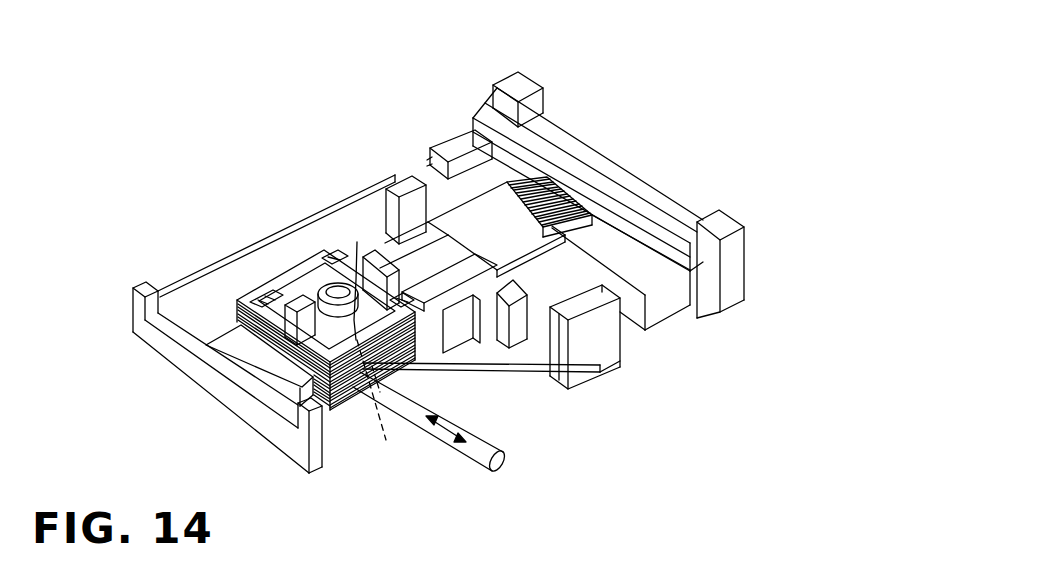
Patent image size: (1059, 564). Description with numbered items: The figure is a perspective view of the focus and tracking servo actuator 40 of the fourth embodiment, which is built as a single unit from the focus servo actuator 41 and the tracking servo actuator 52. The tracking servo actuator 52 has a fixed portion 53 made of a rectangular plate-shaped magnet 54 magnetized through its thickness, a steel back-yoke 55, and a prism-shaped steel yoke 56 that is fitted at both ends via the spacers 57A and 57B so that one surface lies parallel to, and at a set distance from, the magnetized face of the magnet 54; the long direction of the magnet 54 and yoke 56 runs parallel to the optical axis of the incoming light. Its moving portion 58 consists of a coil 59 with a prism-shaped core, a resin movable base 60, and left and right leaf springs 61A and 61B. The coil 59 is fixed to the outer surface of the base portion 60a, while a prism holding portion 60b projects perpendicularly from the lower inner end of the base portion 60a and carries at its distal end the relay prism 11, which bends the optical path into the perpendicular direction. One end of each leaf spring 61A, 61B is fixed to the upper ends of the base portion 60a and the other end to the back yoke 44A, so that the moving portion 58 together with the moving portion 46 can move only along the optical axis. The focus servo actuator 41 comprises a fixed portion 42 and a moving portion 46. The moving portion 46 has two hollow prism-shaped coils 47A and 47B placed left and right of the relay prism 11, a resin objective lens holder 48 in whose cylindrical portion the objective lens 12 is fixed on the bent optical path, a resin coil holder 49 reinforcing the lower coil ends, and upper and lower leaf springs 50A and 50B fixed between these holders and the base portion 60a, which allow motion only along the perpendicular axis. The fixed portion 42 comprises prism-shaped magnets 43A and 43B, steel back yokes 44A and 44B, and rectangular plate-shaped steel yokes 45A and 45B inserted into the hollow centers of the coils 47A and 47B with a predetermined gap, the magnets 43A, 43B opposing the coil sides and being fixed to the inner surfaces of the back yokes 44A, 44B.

The relay prism 11 is at (378, 344).
The objective lens 12 is at (306, 262).
The focus and tracking servo actuator 40 is at (238, 294).
The focus servo actuator 41 is at (319, 334).
The fixed portion 42 is at (374, 121).
The prism-shaped magnet 43A is at (209, 326).
The prism-shaped magnet 43B is at (319, 203).
The steel back yoke 44A is at (110, 301).
The steel back yoke 44B is at (381, 191).
The plate-shaped steel yoke 45A is at (243, 290).
The plate-shaped steel yoke 45B is at (323, 245).
The moving portion 46 is at (655, 498).
The coil 47A is at (324, 407).
The coil 47B is at (398, 413).
The objective lens holder 48 is at (375, 440).
The coil holder 49 is at (333, 450).
The leaf spring 50A is at (509, 403).
The leaf spring 50B is at (567, 395).
The tracking servo actuator 52 is at (696, 151).
The fixed portion 53 is at (588, 168).
The plate-shaped magnet 54 is at (588, 155).
The steel back-yoke 55 is at (540, 83).
The prism-shaped steel yoke 56 is at (459, 109).
The spacer 57A is at (492, 86).
The spacer 57B is at (757, 273).
The moving portion 58 is at (593, 344).
The coil 59 is at (652, 284).
The movable base 60 is at (643, 354).
The base portion 60a is at (647, 338).
The prism holding portion 60b is at (600, 365).
The leaf spring 61A is at (392, 110).
The leaf spring 61B is at (516, 356).